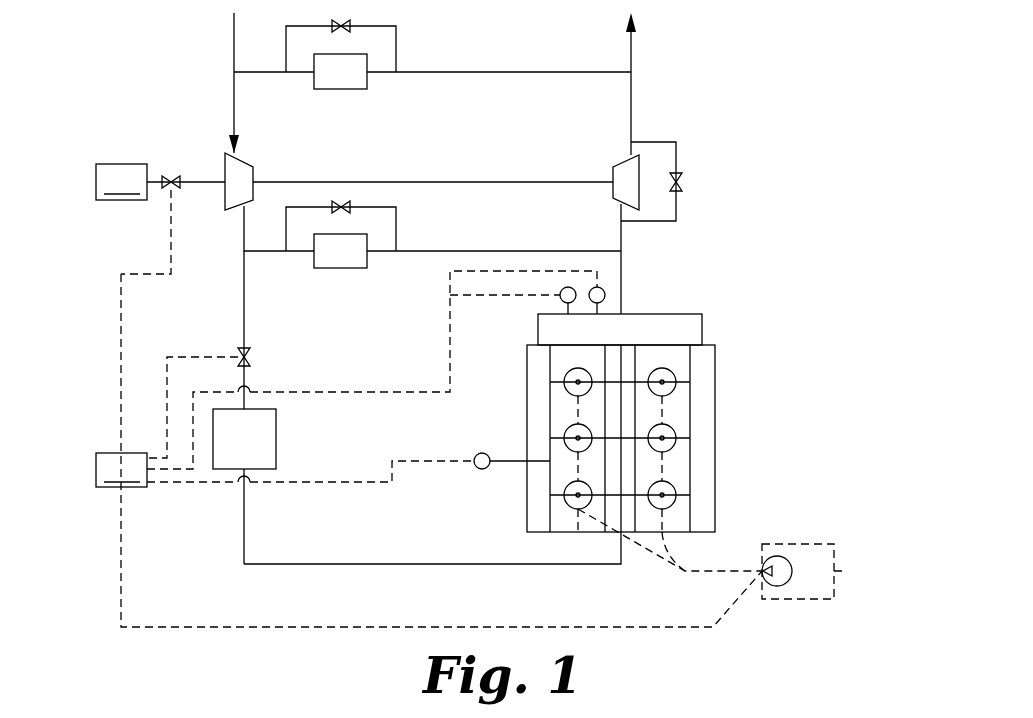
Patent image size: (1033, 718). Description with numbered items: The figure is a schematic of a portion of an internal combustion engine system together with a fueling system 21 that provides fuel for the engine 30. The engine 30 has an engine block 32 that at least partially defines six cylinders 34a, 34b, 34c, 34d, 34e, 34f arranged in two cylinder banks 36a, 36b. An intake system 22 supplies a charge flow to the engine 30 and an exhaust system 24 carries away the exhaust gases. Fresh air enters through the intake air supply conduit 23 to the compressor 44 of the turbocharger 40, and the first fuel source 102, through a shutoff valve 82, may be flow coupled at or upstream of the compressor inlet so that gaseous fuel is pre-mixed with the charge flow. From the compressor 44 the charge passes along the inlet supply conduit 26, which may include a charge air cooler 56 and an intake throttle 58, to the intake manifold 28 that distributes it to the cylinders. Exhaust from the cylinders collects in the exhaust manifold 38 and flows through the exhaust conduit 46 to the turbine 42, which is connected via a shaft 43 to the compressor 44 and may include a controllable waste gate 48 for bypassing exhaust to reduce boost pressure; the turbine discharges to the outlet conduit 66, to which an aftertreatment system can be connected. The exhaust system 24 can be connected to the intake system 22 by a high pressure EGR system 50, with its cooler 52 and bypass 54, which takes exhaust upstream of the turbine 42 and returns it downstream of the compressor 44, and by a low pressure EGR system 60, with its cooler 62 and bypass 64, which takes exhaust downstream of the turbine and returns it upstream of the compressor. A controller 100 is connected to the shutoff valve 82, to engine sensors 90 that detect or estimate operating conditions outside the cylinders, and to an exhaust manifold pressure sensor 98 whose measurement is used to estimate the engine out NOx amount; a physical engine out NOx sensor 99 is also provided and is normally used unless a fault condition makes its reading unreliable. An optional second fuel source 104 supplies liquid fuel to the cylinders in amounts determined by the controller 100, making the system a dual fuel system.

The fueling system 21 is at (124, 221).
The intake system 22 is at (243, 577).
The intake air supply conduit 23 is at (234, 85).
The exhaust system 24 is at (648, 105).
The inlet supply conduit 26 is at (345, 565).
The intake manifold 28 is at (625, 362).
The engine 30 is at (740, 352).
The engine block 32 is at (578, 533).
The cylinder 34a is at (565, 488).
The cylinder 34b is at (565, 437).
The cylinder 34c is at (565, 380).
The cylinder 34d is at (675, 395).
The cylinder 34e is at (700, 452).
The cylinder 34f is at (700, 478).
The cylinder bank 36a is at (560, 533).
The cylinder bank 36b is at (700, 520).
The exhaust manifold 38 is at (648, 325).
The turbocharger 40 is at (471, 165).
The turbine 42 is at (616, 165).
The shaft 43 is at (380, 175).
The compressor 44 is at (240, 160).
The exhaust conduit 46 is at (622, 242).
The waste gate 48 is at (682, 185).
The high pressure EGR system 50 is at (411, 268).
The cooler 52 is at (338, 270).
The bypass 54 is at (396, 215).
The charge air cooler 56 is at (276, 440).
The intake throttle 58 is at (240, 352).
The low pressure EGR system 60 is at (472, 58).
The cooler 62 is at (340, 89).
The bypass 64 is at (396, 45).
The outlet conduit 66 is at (631, 45).
The shutoff valve 82 is at (175, 175).
The engine sensor 90 is at (477, 455).
The exhaust manifold pressure sensor 98 is at (565, 287).
The engine out NOx sensor 99 is at (600, 287).
The controller 100 is at (346, 379).
The first fuel source 102 is at (121, 182).
The second fuel source 104 is at (844, 571).